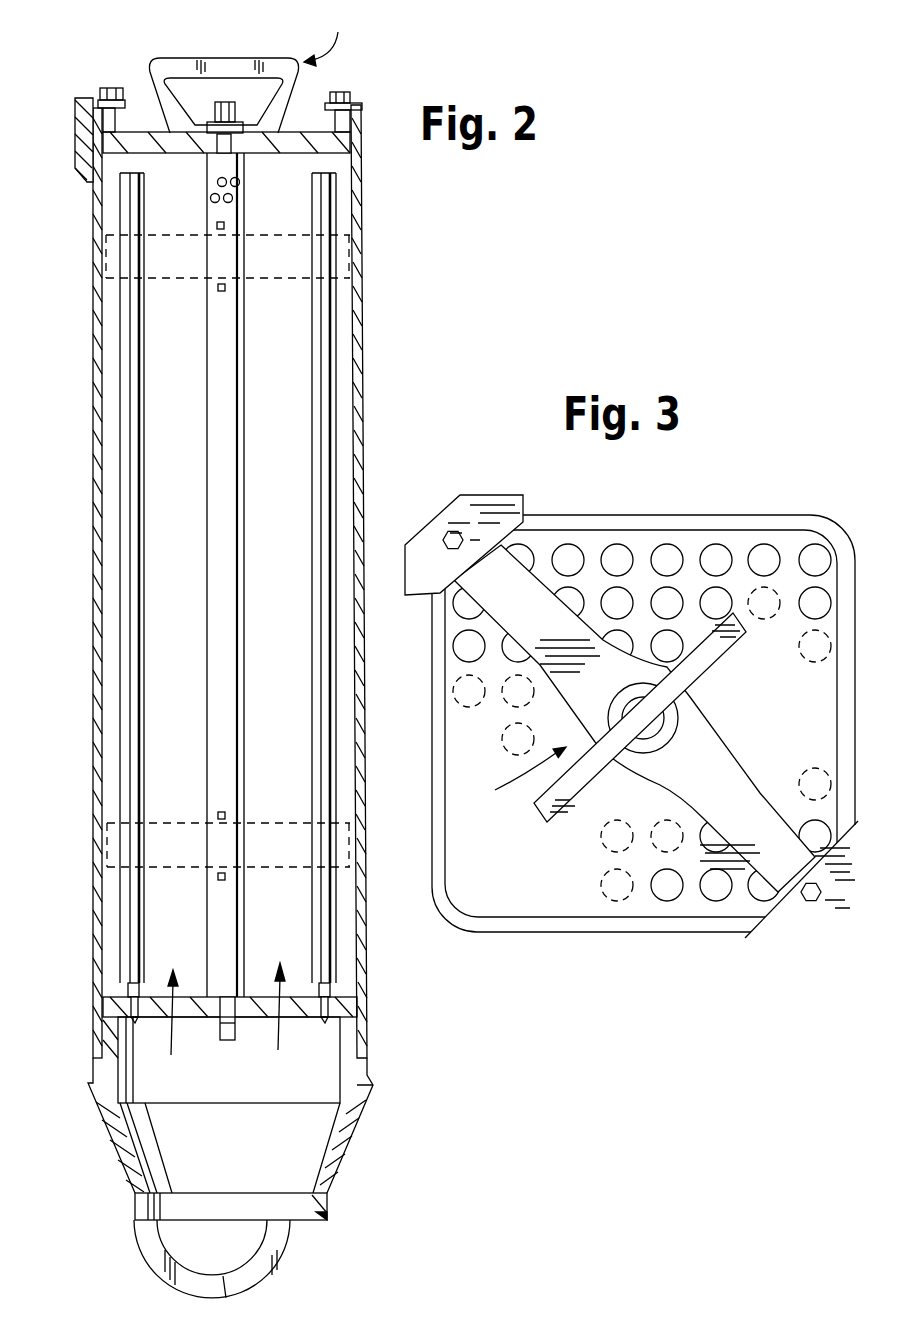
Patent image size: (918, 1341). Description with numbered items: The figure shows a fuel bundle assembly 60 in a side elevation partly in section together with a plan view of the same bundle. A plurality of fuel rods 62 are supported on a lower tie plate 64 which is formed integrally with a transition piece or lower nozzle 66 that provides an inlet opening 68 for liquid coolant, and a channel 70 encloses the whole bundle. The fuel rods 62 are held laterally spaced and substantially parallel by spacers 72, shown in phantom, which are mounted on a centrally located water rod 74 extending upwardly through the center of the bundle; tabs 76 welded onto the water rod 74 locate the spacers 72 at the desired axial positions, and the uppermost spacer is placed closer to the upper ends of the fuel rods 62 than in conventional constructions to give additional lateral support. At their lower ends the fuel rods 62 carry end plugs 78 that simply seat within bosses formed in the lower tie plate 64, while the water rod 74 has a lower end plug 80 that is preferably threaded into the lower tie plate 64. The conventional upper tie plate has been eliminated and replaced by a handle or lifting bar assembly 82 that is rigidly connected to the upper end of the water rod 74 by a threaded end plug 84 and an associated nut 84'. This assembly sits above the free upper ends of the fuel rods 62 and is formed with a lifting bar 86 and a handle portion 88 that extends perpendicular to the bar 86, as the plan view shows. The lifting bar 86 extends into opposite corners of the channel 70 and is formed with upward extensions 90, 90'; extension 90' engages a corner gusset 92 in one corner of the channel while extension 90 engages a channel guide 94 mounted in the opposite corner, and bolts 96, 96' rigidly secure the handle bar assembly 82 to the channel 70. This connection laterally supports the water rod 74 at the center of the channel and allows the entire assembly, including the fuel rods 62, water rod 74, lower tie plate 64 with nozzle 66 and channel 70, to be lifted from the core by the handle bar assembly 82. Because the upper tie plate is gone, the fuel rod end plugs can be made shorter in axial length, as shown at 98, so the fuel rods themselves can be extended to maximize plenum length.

In FIG. 2, the fuel bundle assembly 60 is at (425, 325).
In FIG. 2, the fuel rods 62 is at (320, 390).
In FIG. 3, the fuel rods 62 is at (669, 558).
In FIG. 2, the lower tie plate 64 is at (257, 1008).
In FIG. 2, the transition piece or lower nozzle 66 is at (350, 1135).
In FIG. 2, the inlet opening 68 is at (240, 1238).
In FIG. 2, the channel 70 is at (362, 446).
In FIG. 3, the channel 70 is at (789, 526).
In FIG. 2, the spacers 72 is at (167, 268).
In FIG. 2, the water rod 74 is at (220, 690).
In FIG. 2, the tabs 76 is at (224, 224).
In FIG. 2, the end plugs 78 is at (145, 997).
In FIG. 2, the lower end plug 80 is at (220, 1023).
In FIG. 2, the handle or lifting bar assembly 82 is at (328, 36).
In FIG. 3, the handle or lifting bar assembly 82 is at (511, 776).
In FIG. 2, the threaded end plug 84 is at (198, 166).
In FIG. 2, the nut 84' is at (212, 105).
In FIG. 2, the lifting bar 86 is at (350, 143).
In FIG. 3, the lifting bar 86 is at (714, 762).
In FIG. 2, the handle portion 88 is at (177, 68).
In FIG. 3, the handle portion 88 is at (703, 664).
In FIG. 2, the upward extension 90 is at (116, 71).
In FIG. 2, the upward extension 90' is at (363, 84).
In FIG. 2, the corner gusset 92 is at (350, 97).
In FIG. 3, the corner gusset 92 is at (791, 912).
In FIG. 2, the channel guide 94 is at (76, 113).
In FIG. 3, the channel guide 94 is at (428, 562).
In FIG. 2, the bolt 96 is at (99, 81).
In FIG. 3, the bolt 96 is at (473, 532).
In FIG. 3, the bolt 96' is at (855, 902).
In FIG. 2, the shortened fuel rod end plugs 98 is at (128, 168).